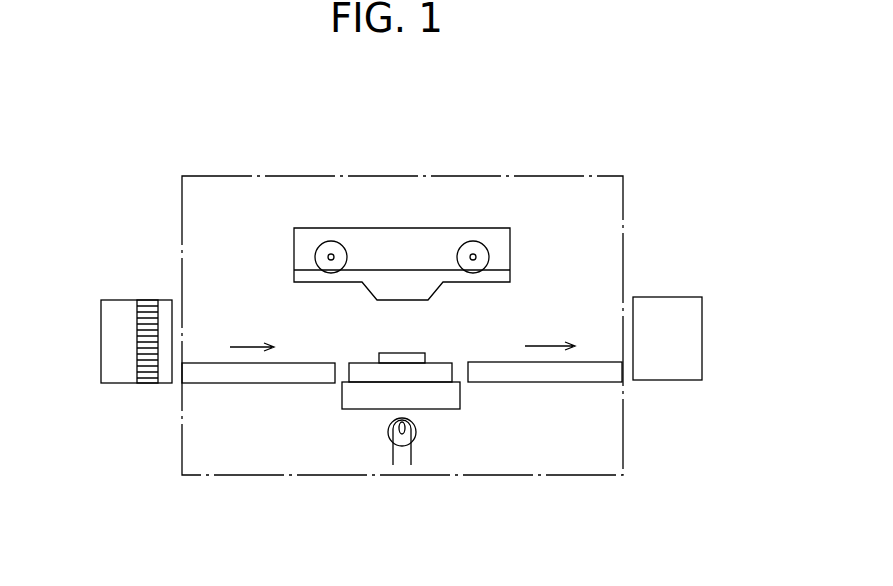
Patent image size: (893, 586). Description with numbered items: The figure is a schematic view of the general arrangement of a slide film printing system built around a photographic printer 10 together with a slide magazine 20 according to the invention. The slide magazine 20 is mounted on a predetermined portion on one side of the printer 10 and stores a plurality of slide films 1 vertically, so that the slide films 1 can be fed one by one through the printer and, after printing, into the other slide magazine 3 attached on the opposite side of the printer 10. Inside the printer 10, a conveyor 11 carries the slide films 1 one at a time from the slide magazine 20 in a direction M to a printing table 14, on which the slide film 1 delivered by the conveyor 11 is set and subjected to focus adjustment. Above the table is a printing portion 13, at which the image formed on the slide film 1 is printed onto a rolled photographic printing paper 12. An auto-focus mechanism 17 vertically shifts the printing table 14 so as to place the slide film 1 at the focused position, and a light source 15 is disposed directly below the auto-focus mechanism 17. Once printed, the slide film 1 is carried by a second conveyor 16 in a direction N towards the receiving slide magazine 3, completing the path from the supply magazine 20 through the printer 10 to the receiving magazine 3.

The slide film 1 is at (148, 381).
The slide magazine 3 is at (656, 372).
The photographic printer 10 is at (623, 215).
The conveyor 11 is at (257, 384).
The photographic printing paper 12 is at (362, 270).
The printing portion 13 is at (488, 232).
The printing table 14 is at (361, 363).
The light source 15 is at (416, 436).
The conveyor 16 is at (537, 383).
The auto-focus mechanism 17 is at (362, 410).
The slide magazine 20 is at (126, 303).